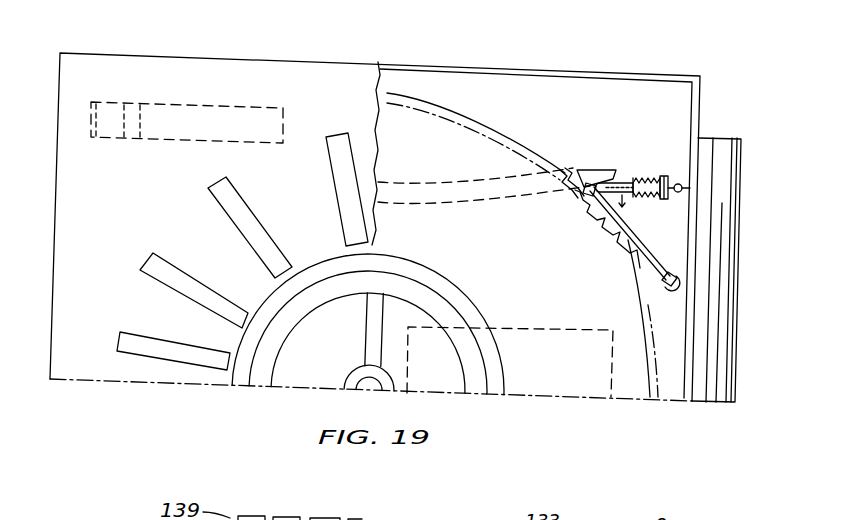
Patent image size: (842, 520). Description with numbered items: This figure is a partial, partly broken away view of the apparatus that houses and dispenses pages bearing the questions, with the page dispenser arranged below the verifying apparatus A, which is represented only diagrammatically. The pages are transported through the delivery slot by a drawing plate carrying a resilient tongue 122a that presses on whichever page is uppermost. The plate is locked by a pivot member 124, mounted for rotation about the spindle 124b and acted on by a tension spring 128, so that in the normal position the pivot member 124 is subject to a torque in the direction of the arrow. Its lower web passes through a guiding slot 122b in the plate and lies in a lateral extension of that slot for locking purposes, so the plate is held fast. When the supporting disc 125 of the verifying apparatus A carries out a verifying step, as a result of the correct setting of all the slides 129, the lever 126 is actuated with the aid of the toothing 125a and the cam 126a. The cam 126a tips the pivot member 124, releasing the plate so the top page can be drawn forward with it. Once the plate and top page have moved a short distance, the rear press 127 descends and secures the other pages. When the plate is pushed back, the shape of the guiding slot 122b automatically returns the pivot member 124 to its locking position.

The verifying apparatus A is at (104, 66).
The resilient tongue 122a is at (613, 402).
The guiding slot 122b is at (433, 187).
The pivot member 124 is at (632, 183).
The spindle 124b is at (657, 198).
The supporting disc 125 is at (588, 390).
The toothing 125a is at (605, 233).
The lever 126 is at (640, 263).
The cam 126a is at (588, 200).
The rear press 127 is at (93, 140).
The tension spring 128 is at (663, 180).
The slides 129 is at (230, 188).